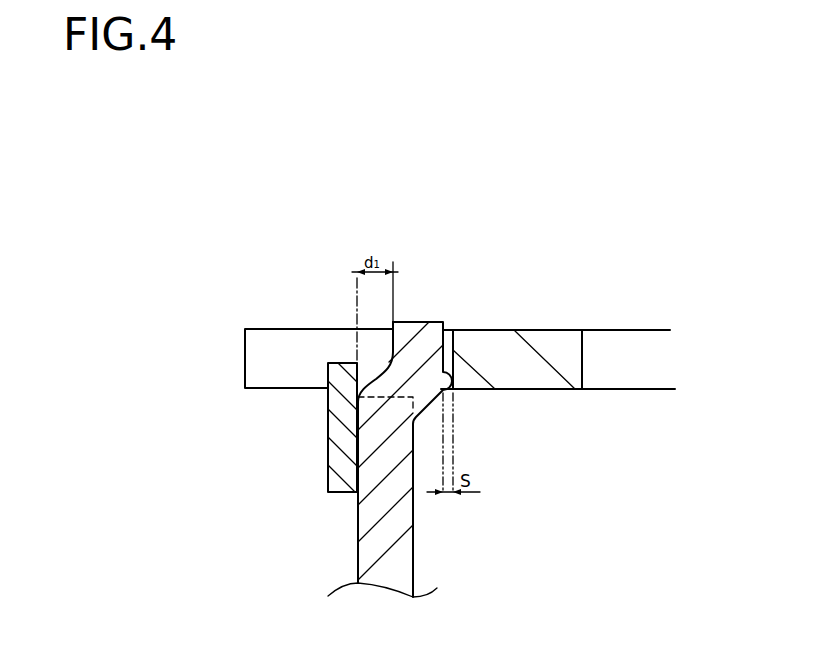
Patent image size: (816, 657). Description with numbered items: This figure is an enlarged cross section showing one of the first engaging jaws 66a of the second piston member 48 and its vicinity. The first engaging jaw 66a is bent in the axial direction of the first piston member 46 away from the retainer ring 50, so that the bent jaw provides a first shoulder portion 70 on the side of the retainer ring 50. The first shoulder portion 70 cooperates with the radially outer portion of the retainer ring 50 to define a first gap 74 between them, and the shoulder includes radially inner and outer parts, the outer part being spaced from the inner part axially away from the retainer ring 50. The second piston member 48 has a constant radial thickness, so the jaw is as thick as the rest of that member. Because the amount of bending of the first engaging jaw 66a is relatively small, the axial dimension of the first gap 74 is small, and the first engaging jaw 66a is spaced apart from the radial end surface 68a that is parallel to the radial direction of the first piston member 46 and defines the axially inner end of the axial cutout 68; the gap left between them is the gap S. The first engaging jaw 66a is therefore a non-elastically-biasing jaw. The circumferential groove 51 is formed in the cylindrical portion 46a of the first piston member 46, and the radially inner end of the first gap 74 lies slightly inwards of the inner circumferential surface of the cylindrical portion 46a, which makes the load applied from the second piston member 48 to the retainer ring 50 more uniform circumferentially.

The first piston member 46 is at (558, 275).
The cylindrical portion 46a is at (550, 348).
The second piston member 48 is at (393, 421).
The retainer ring 50 is at (277, 427).
The circumferential groove 51 is at (340, 388).
The first engaging jaw 66a is at (415, 400).
The axial cutout 68 is at (299, 351).
The radial end surface 68a is at (443, 391).
The first shoulder portion 70 is at (366, 360).
The first gap 74 is at (376, 356).